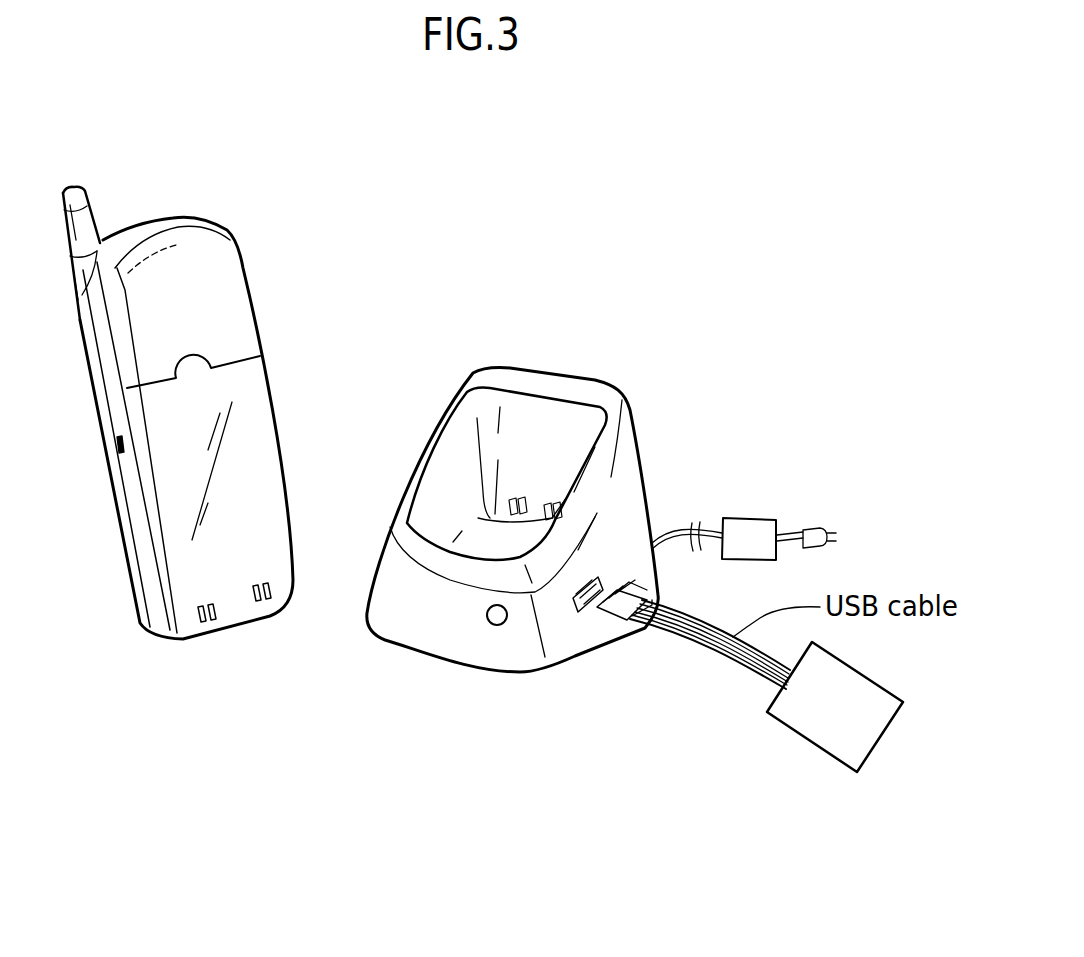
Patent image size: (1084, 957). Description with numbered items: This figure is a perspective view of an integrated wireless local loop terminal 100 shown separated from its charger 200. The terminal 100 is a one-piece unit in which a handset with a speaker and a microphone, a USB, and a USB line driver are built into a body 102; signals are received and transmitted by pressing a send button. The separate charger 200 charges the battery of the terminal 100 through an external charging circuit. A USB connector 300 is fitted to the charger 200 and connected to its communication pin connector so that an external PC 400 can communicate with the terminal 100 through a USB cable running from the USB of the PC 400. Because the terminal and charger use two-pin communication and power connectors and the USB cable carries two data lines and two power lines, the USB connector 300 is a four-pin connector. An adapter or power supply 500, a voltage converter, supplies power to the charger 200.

The WLL terminal 100 is at (208, 391).
The body 102 is at (233, 317).
The charger 200 is at (413, 625).
The USB connector 300 is at (583, 610).
The PC 400 is at (807, 737).
The adapter or power supply 500 is at (748, 530).